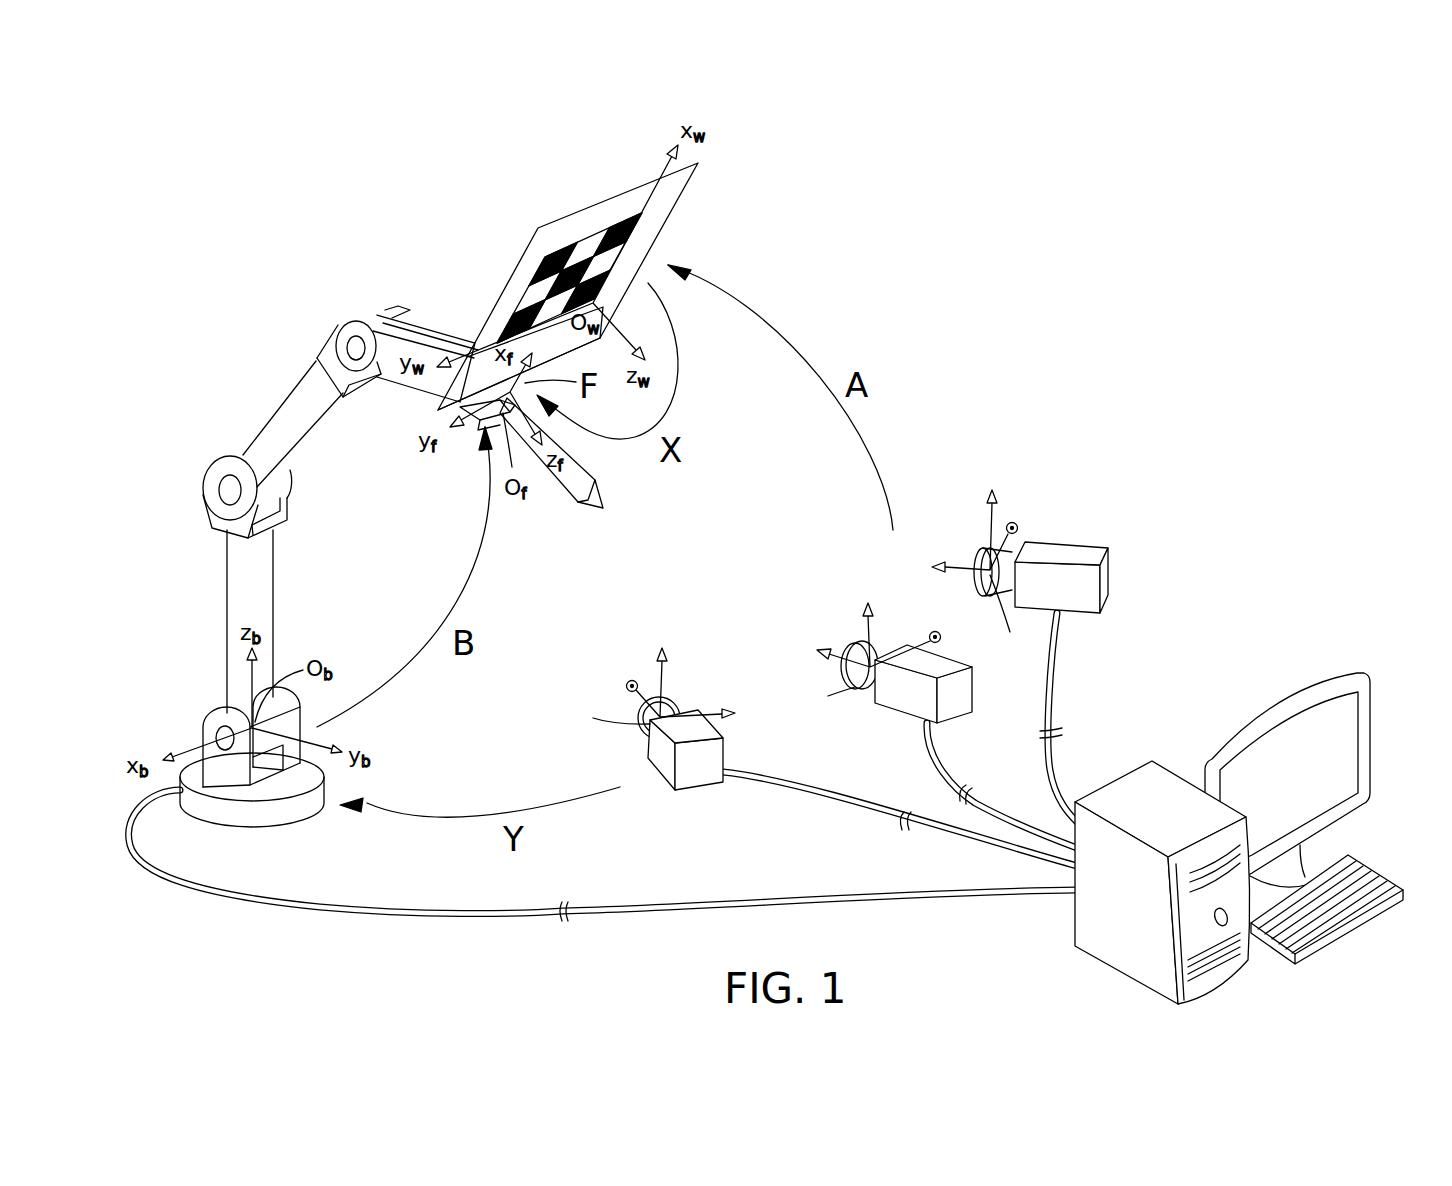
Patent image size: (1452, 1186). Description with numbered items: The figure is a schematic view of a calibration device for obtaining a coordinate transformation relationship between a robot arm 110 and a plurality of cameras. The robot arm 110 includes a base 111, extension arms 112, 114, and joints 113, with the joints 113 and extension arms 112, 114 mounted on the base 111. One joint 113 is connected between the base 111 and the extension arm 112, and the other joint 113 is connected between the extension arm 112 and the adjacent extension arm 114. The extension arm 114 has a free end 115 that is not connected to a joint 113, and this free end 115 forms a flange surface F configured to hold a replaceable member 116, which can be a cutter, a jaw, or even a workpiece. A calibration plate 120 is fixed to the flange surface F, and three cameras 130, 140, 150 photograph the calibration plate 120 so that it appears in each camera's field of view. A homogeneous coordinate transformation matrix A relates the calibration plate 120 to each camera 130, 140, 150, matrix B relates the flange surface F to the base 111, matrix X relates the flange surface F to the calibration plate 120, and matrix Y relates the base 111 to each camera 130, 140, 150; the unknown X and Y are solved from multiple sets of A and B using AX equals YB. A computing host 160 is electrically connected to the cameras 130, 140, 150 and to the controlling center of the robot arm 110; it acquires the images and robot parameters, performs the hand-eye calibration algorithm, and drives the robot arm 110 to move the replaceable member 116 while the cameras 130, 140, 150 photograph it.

The robot arm 110 is at (248, 352).
The base 111 is at (272, 810).
The extension arm 112 is at (277, 428).
The joint 113 is at (352, 348).
The extension arm 114 is at (433, 327).
The free end 115 is at (472, 408).
The replaceable member 116 is at (570, 485).
The calibration plate 120 is at (688, 197).
The camera 130 is at (695, 767).
The camera 140 is at (910, 693).
The camera 150 is at (1077, 557).
The computing host 160 is at (1148, 780).